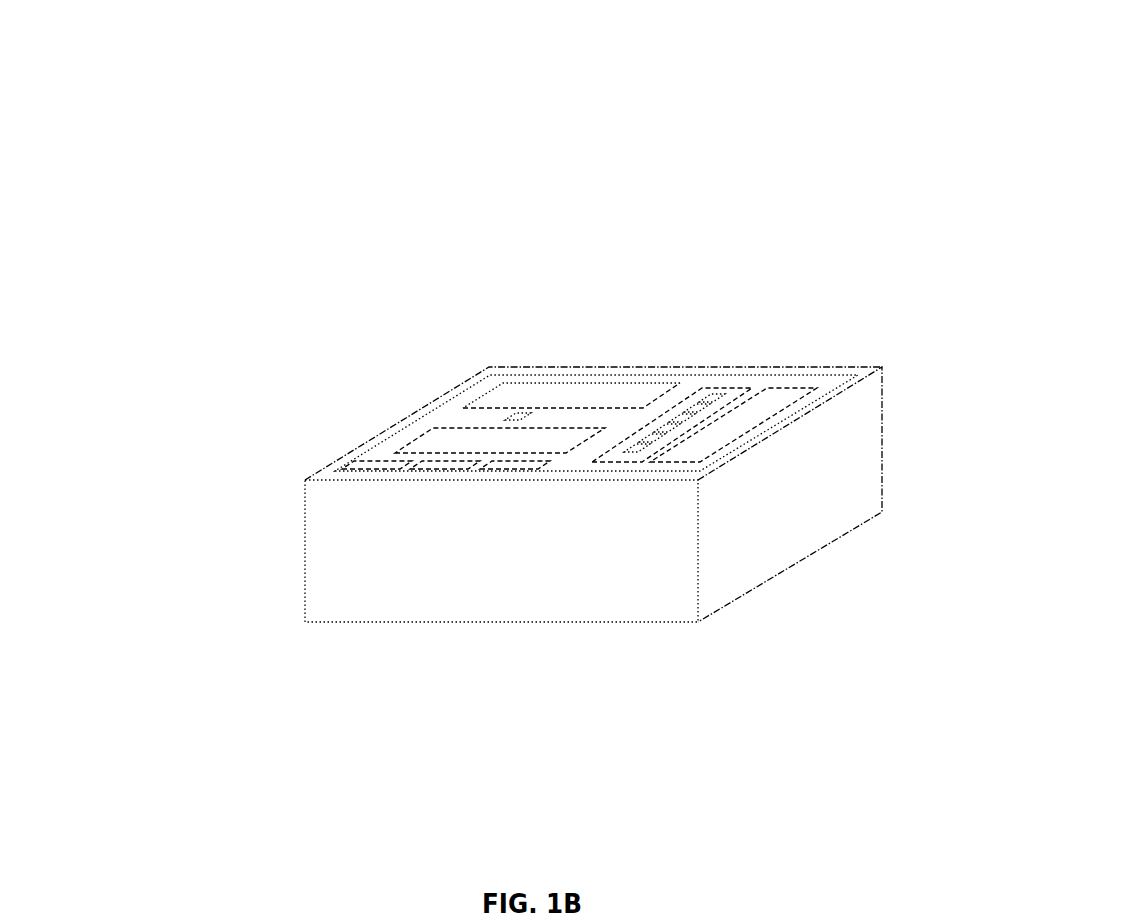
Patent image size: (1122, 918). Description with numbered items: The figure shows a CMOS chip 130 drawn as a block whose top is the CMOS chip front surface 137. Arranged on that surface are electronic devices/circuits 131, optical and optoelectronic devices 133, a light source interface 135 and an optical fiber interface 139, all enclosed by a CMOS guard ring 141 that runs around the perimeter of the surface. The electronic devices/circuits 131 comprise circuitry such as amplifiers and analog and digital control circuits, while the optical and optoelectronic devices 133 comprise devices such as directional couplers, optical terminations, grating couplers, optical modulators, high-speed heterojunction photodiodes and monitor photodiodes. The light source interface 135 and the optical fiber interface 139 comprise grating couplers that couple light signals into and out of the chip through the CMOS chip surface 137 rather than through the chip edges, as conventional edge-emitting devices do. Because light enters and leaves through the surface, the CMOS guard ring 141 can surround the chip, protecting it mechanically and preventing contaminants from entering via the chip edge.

The CMOS chip 130 is at (148, 92).
The electronic devices/circuits 131 is at (409, 693).
The optical and optoelectronic devices 133 is at (493, 388).
The light source interface 135 is at (518, 410).
The CMOS chip front surface 137 is at (688, 382).
The optical fiber interface 139 is at (719, 389).
The CMOS guard ring 141 is at (868, 397).